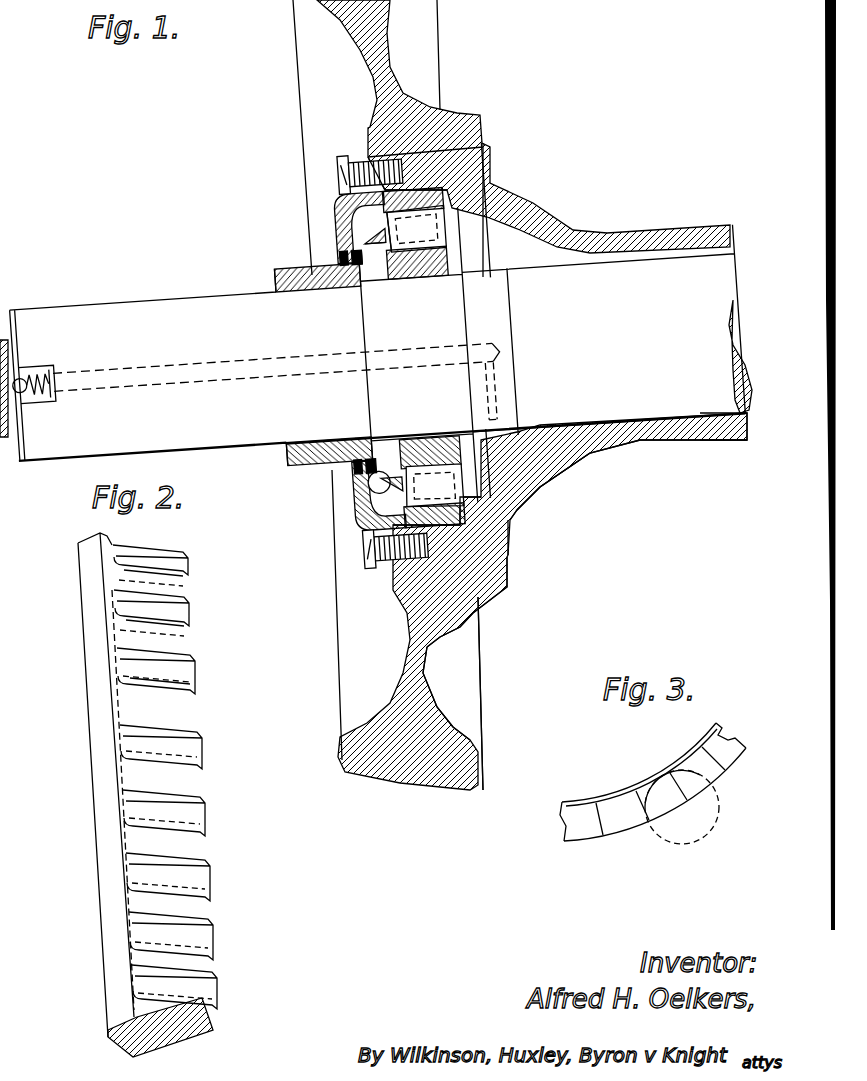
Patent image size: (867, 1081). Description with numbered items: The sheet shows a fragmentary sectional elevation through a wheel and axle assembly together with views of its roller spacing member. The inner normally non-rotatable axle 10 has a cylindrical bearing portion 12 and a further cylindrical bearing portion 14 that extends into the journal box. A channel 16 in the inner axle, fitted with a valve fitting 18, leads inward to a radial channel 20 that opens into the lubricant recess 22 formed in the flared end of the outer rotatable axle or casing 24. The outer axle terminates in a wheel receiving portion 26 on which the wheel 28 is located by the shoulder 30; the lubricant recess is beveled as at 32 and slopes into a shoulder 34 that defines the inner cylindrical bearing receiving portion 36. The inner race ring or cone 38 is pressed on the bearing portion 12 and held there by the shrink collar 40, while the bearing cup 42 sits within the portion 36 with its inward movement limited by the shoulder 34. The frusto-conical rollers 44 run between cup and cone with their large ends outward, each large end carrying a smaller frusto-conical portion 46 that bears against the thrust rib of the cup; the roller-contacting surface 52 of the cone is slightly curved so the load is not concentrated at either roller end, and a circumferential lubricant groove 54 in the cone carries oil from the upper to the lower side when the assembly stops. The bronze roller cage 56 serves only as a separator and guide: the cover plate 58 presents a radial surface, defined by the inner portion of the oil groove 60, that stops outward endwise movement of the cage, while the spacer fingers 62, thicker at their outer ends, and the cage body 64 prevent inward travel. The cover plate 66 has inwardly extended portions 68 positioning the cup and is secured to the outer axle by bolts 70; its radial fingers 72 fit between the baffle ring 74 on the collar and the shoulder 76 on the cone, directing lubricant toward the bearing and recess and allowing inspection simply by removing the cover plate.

In FIG. 1, the inner axle 10 is at (680, 405).
In FIG. 1, the cylindrical bearing portion 12 is at (377, 361).
In FIG. 1, the cylindrical bearing portion 14 is at (187, 460).
In FIG. 1, the channel 16 is at (227, 367).
In FIG. 1, the valve fitting 18 is at (33, 403).
In FIG. 1, the radial channel 20 is at (497, 387).
In FIG. 1, the lubricant recess 22 is at (555, 480).
In FIG. 1, the outer rotatable axle 24 is at (730, 440).
In FIG. 1, the wheel receiving portion 26 is at (507, 588).
In FIG. 1, the wheel 28 is at (460, 665).
In FIG. 1, the shoulder 30 is at (510, 557).
In FIG. 1, the bevel 32 is at (518, 512).
In FIG. 1, the shoulder 34 is at (430, 208).
In FIG. 1, the bearing receiving portion 36 is at (483, 147).
In FIG. 1, the inner race ring or cone 38 is at (467, 445).
In FIG. 1, the shrink collar 40 is at (290, 460).
In FIG. 1, the bearing cup 42 is at (447, 220).
In FIG. 1, the rollers 44 is at (563, 202).
In FIG. 3, the rollers 44 is at (682, 850).
In FIG. 1, the frusto-conical portion 46 is at (405, 502).
In FIG. 1, the surface 52 is at (463, 458).
In FIG. 1, the lubricant groove 54 is at (383, 277).
In FIG. 1, the roller cage 56 is at (357, 495).
In FIG. 2, the roller cage 56 is at (83, 607).
In FIG. 1, the cover plate 58 is at (342, 220).
In FIG. 1, the oil groove 60 is at (357, 483).
In FIG. 2, the spacer fingers 62 is at (187, 657).
In FIG. 3, the spacer fingers 62 is at (637, 807).
In FIG. 2, the body 64 is at (100, 752).
In FIG. 1, the cover plate 66 is at (378, 527).
In FIG. 1, the inwardly extended portions 68 is at (372, 557).
In FIG. 1, the bolts 70 is at (372, 547).
In FIG. 1, the radial fingers 72 is at (342, 247).
In FIG. 1, the baffle ring 74 is at (340, 258).
In FIG. 1, the shoulder 76 is at (343, 205).